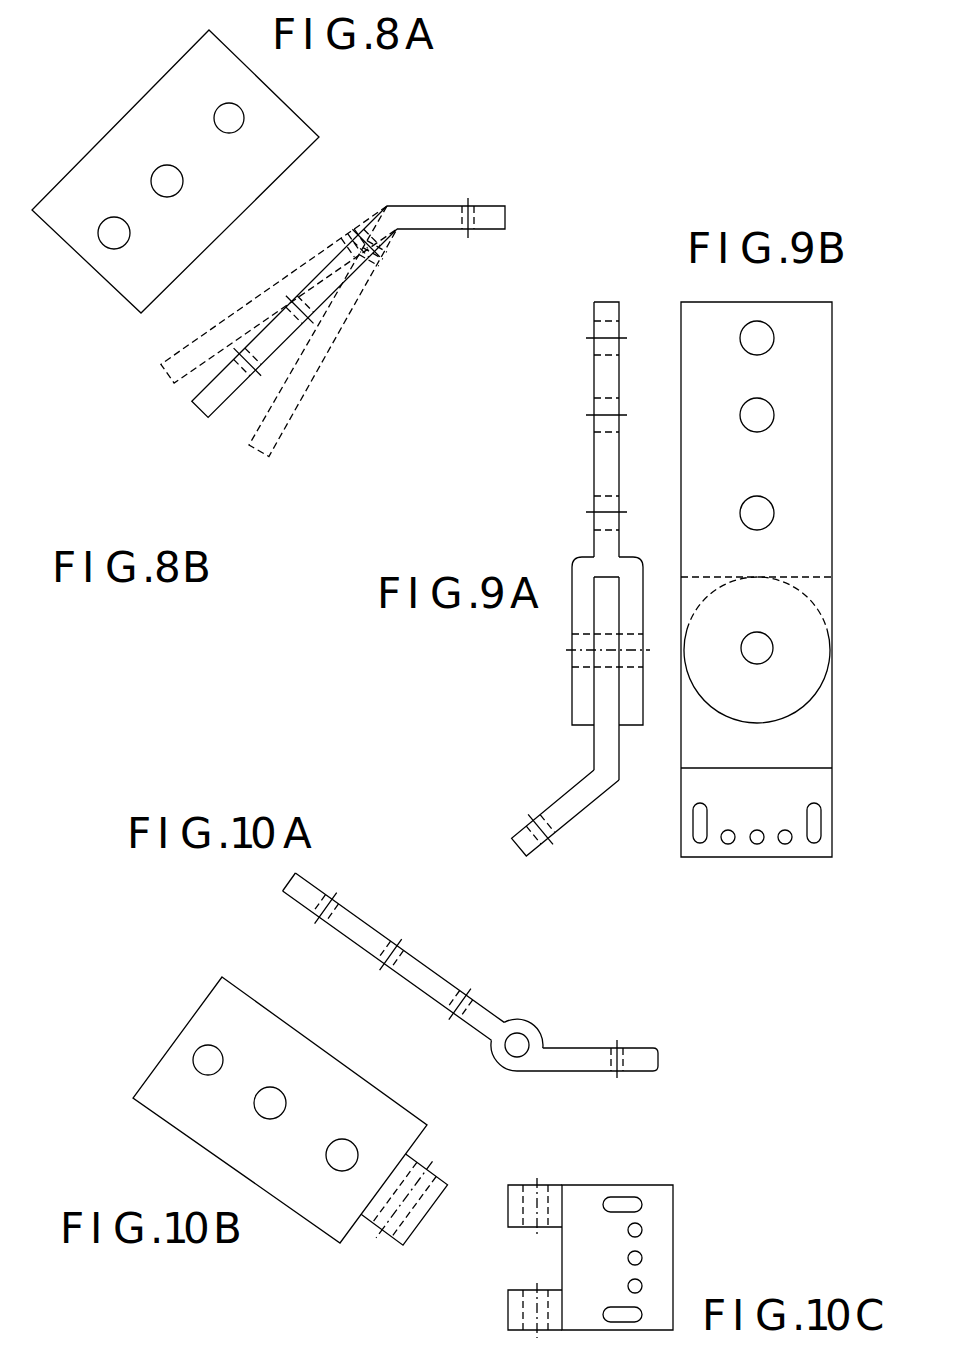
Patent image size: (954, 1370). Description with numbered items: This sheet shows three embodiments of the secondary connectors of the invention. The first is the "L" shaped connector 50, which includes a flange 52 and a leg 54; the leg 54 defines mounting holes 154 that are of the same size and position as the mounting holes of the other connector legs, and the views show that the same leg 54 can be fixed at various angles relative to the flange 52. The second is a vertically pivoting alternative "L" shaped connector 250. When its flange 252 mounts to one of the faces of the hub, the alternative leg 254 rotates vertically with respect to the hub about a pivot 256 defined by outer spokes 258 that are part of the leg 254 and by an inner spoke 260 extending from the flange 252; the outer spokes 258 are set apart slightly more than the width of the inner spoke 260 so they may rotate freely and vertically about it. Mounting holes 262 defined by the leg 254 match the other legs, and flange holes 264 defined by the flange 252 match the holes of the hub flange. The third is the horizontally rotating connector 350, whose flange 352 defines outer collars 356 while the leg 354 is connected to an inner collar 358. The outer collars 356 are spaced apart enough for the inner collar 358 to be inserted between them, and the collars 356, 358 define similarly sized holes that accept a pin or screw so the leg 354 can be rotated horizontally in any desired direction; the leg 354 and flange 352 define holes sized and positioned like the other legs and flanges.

In FIG. 8B, the "L" shaped connector 50 is at (398, 232).
In FIG. 8B, the flange 52 is at (433, 206).
In FIG. 8A, the leg 54 is at (65, 168).
In FIG. 8B, the leg 54 is at (165, 373).
In FIG. 8A, the mounting holes 154 is at (113, 218).
In FIG. 9A, the vertically pivoting alternative "L" shaped connector 250 is at (506, 420).
In FIG. 9A, the flange 252 is at (532, 860).
In FIG. 9A, the alternative leg 254 is at (594, 463).
In FIG. 9A, the pivot 256 is at (594, 651).
In FIG. 9A, the outer spokes 258 is at (582, 706).
In FIG. 9A, the inner spoke 260 is at (607, 745).
In FIG. 9A, the mounting holes 262 is at (594, 338).
In FIG. 9B, the mounting holes 262 is at (772, 343).
In FIG. 9A, the flange holes 264 is at (535, 820).
In FIG. 9B, the flange holes 264 is at (700, 843).
In FIG. 10B, the horizontally rotating connector 350 is at (110, 1088).
In FIG. 10A, the flange 352 is at (574, 1047).
In FIG. 10B, the leg 354 is at (353, 1110).
In FIG. 10C, the outer collars 356 is at (538, 1183).
In FIG. 10B, the inner collar 358 is at (413, 1244).